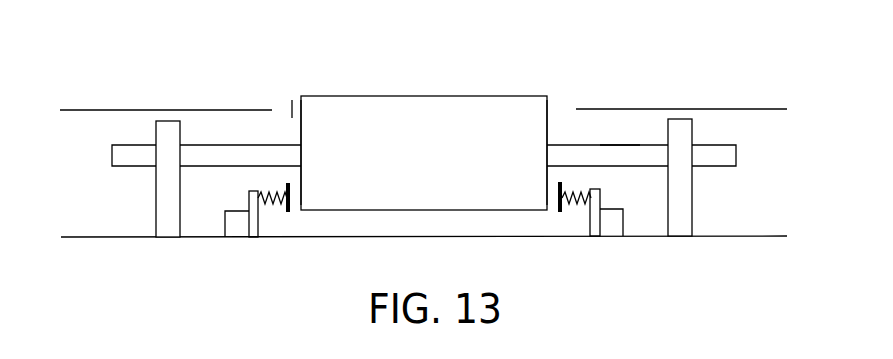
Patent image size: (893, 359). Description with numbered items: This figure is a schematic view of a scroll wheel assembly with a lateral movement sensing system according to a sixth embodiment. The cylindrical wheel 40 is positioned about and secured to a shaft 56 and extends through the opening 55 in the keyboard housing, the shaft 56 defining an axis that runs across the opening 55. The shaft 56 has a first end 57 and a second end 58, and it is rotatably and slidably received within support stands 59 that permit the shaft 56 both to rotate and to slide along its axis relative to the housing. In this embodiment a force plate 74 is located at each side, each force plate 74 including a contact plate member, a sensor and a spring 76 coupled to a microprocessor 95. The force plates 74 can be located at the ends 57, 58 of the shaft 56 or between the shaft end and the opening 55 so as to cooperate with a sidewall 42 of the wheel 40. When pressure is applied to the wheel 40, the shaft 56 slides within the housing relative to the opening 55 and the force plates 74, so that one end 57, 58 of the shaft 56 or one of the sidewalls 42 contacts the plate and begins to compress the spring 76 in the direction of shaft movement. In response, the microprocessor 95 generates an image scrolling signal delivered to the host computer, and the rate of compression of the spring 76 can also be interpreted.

The wheel 40 is at (455, 92).
The sidewall 42 is at (300, 125).
The opening 55 is at (292, 100).
The shaft 56 is at (623, 144).
The first end 57 is at (112, 157).
The second end 58 is at (736, 155).
The support stands 59 is at (178, 121).
The force plate 74 is at (288, 183).
The spring 76 is at (269, 205).
The microprocessor 95 is at (228, 221).